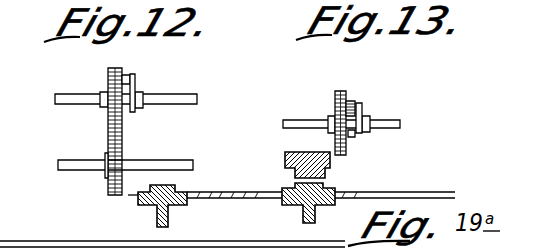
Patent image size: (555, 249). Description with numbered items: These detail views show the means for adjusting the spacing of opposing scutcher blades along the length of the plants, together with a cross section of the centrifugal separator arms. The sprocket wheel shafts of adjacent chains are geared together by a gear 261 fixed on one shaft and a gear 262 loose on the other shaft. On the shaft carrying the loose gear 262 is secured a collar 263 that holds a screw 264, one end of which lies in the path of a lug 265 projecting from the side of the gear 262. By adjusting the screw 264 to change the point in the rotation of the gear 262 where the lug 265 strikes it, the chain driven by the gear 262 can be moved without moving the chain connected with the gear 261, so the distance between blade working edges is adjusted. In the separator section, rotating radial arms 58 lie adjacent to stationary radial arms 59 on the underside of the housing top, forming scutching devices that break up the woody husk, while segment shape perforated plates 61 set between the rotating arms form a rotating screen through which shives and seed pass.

In FIG. 12, the gear 262 is at (108, 93).
In FIG. 13, the gear 262 is at (335, 113).
In FIG. 12, the collar 263 is at (140, 93).
In FIG. 12, the gear 261 is at (108, 178).
In FIG. 13, the lug 265 is at (351, 107).
In FIG. 13, the screw 264 is at (353, 135).
In FIG. 19A, the radial arms 58 is at (168, 186).
In FIG. 19A, the radial arms 59 is at (292, 181).
In FIG. 19A, the segment shape perforated plates 61 is at (213, 195).